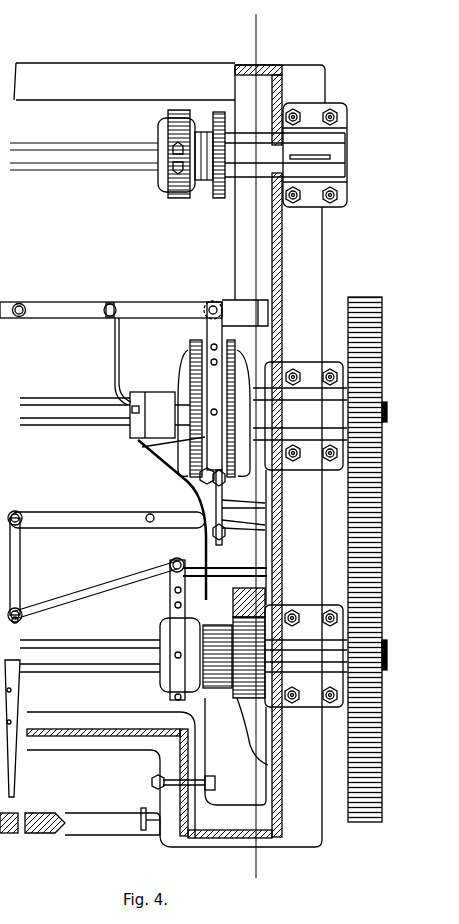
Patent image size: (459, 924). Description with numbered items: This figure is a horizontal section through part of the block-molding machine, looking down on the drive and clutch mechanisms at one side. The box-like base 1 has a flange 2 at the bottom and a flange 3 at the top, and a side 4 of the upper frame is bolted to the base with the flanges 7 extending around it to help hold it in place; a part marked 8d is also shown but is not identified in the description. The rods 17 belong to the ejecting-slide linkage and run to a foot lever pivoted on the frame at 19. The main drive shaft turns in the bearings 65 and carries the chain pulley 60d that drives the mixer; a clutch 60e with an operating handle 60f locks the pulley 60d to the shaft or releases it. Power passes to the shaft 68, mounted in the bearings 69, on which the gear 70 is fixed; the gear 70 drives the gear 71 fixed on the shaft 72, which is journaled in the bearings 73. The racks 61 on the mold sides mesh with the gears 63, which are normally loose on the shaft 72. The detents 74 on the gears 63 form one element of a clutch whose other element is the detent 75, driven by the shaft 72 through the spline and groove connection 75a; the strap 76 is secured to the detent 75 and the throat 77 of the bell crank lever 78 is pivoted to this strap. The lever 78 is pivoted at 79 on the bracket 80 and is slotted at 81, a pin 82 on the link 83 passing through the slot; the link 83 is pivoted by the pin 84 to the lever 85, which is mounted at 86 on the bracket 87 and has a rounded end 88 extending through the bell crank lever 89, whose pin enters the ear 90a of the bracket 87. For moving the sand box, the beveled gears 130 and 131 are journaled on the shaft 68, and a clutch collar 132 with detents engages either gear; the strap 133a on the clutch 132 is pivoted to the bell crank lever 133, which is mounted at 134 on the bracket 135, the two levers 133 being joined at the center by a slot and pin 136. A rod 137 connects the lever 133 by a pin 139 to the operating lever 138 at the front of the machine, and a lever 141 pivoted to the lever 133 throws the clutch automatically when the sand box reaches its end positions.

The base 1 is at (67, 727).
The bottom flange 2 is at (330, 840).
The top flange 3 is at (124, 81).
The upper frame side 4 is at (282, 264).
The flanges 7 is at (240, 246).
The pointed bar 8d is at (21, 768).
The rods 17 is at (136, 815).
The foot lever pivot 19 is at (156, 782).
The chain pulley 60d is at (217, 110).
The clutch 60e is at (174, 197).
The operating handle 60f is at (330, 158).
The racks 61 is at (232, 610).
The gears 63 is at (246, 700).
The bearings 65 is at (308, 135).
The shaft 68 is at (50, 410).
The bearings 69 is at (305, 400).
The gear 70 is at (353, 297).
The gear 71 is at (378, 566).
The shaft 72 is at (118, 668).
The bearings 73 is at (310, 618).
The detents 74 is at (214, 690).
The detent 75 is at (178, 710).
The spline and groove connection 75a is at (152, 655).
The strap 76 is at (167, 692).
The throat 77 is at (168, 620).
The bell crank lever 78 is at (138, 578).
The pivot 79 is at (181, 556).
The bracket 80 is at (225, 564).
The slots 81 is at (39, 630).
The pin 82 is at (20, 612).
The link 83 is at (18, 577).
The pin 84 is at (20, 513).
The lever 85 is at (66, 515).
The pivot 86 is at (158, 498).
The bracket 87 is at (248, 503).
The rounded end 88 is at (207, 488).
The bell crank lever 89 is at (250, 500).
The ear 90a is at (240, 525).
The beveled gear 130 is at (192, 348).
The beveled gear 131 is at (265, 340).
The clutch collar 132 is at (210, 432).
The bell cranked lever 133 is at (93, 318).
The strap 133a is at (152, 448).
The pivot 134 is at (213, 300).
The bracket 135 is at (248, 302).
The slot and pin 136 is at (24, 302).
The rod 137 is at (124, 350).
The lever 138 is at (206, 782).
The pin 139 is at (216, 781).
The lever 141 is at (112, 303).